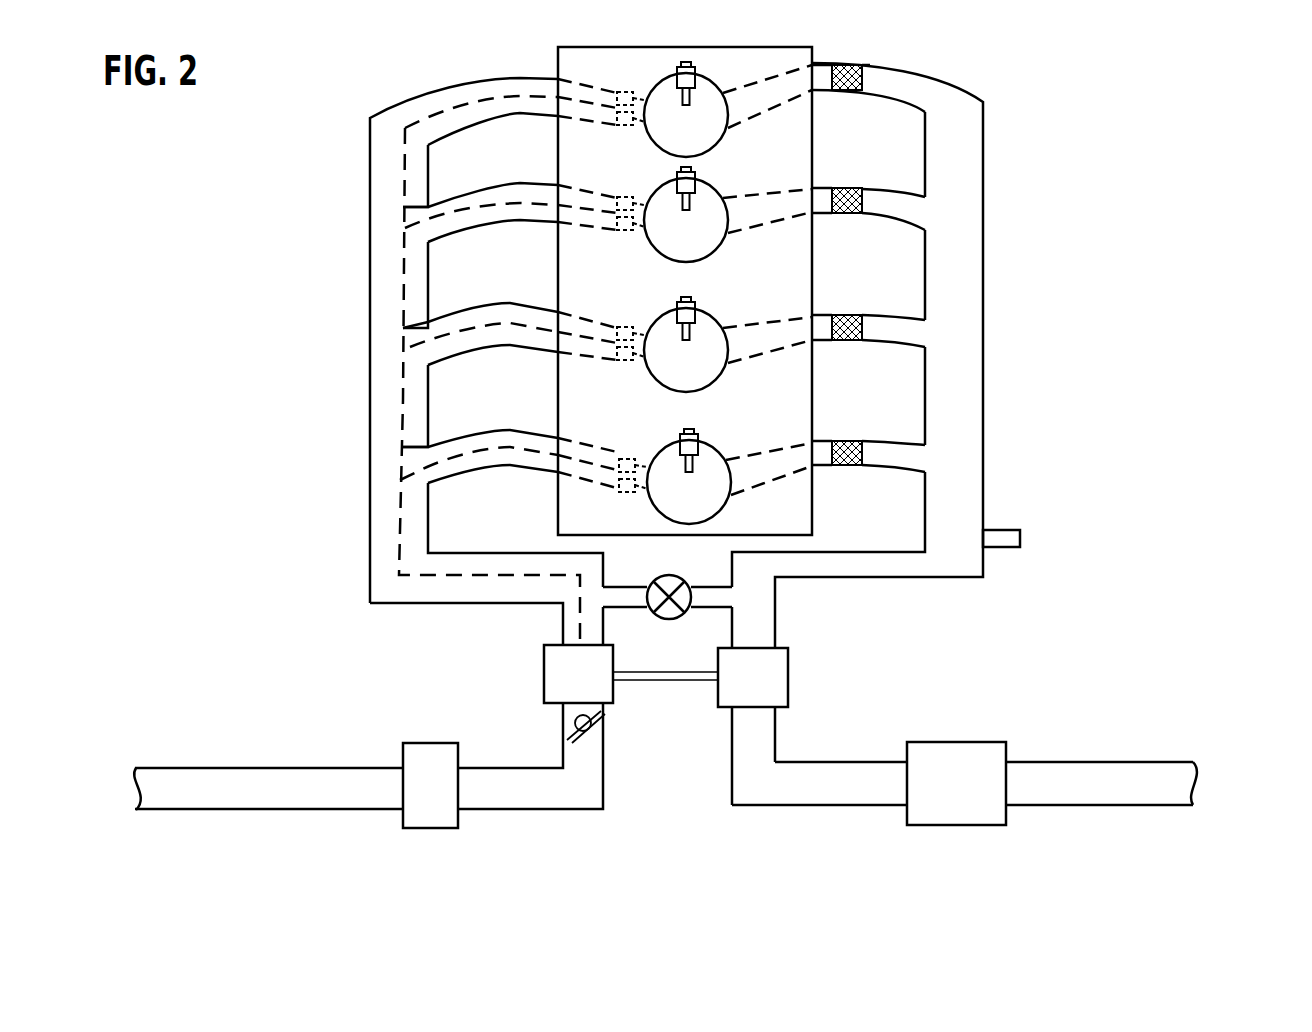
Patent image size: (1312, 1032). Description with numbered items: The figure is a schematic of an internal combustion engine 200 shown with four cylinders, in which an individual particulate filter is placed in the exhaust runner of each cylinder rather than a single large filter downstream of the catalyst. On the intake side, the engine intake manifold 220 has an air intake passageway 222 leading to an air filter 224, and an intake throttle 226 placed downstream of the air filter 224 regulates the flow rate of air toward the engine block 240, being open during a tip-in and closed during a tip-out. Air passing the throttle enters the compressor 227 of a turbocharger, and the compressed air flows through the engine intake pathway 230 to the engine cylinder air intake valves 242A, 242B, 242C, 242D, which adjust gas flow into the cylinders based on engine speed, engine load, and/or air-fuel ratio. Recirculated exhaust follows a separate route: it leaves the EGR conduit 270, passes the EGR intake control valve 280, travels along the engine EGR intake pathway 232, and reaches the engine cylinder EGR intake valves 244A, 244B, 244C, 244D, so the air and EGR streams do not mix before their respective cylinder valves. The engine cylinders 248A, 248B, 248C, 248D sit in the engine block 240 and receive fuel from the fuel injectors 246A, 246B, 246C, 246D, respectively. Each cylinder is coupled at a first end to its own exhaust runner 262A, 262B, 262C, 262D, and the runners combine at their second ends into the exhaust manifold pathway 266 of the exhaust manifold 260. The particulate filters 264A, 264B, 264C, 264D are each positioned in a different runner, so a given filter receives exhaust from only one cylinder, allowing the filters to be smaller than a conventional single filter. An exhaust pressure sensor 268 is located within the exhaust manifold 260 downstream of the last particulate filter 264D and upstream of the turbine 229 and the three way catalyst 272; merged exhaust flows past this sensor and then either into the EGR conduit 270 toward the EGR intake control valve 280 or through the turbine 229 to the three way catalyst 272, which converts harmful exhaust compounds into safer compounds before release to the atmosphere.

The internal combustion engine 200 is at (1181, 98).
The engine intake manifold 220 is at (345, 78).
The air intake passageway 222 is at (285, 766).
The air filter 224 is at (425, 742).
The intake throttle 226 is at (588, 730).
The compressor 227 is at (578, 674).
The turbine 229 is at (700, 726).
The engine intake pathway 230 is at (378, 574).
The engine EGR intake pathway 232 is at (407, 515).
The engine block 240 is at (645, 47).
The engine cylinder air intake valve 242A is at (625, 93).
The engine cylinder air intake valve 242B is at (632, 197).
The engine cylinder air intake valve 242C is at (628, 327).
The engine cylinder air intake valve 242D is at (632, 459).
The engine cylinder EGR intake valve 244A is at (625, 124).
The engine cylinder EGR intake valve 244B is at (632, 232).
The engine cylinder EGR intake valve 244C is at (628, 361).
The engine cylinder EGR intake valve 244D is at (634, 492).
The fuel injector 246A is at (697, 70).
The fuel injector 246B is at (697, 175).
The fuel injector 246C is at (697, 300).
The fuel injector 246D is at (700, 430).
The engine cylinder 248A is at (720, 140).
The engine cylinder 248B is at (722, 253).
The engine cylinder 248C is at (720, 380).
The engine cylinder 248D is at (715, 512).
The exhaust manifold 260 is at (1087, 341).
The exhaust runner 262A is at (912, 110).
The exhaust runner 262B is at (912, 232).
The exhaust runner 262C is at (912, 350).
The exhaust runner 262D is at (912, 475).
The particulate filter 264A is at (845, 64).
The particulate filter 264B is at (845, 188).
The particulate filter 264C is at (845, 315).
The particulate filter 264D is at (845, 441).
The exhaust manifold pathway 266 is at (985, 237).
The exhaust pressure sensor 268 is at (1012, 530).
The EGR conduit 270 is at (617, 590).
The three way catalyst 272 is at (965, 742).
The EGR intake control valve 280 is at (678, 618).